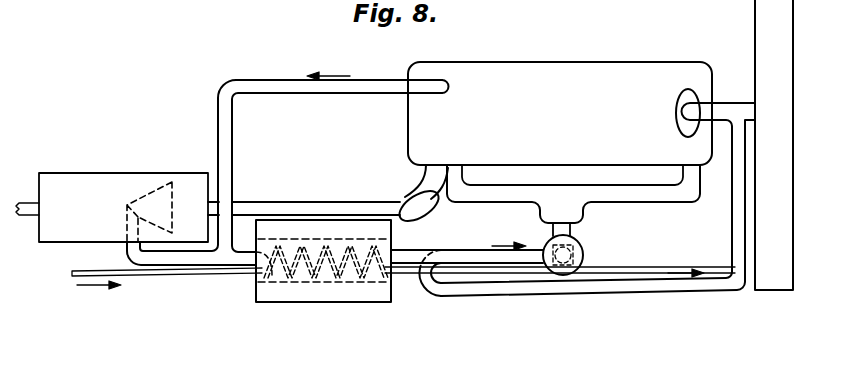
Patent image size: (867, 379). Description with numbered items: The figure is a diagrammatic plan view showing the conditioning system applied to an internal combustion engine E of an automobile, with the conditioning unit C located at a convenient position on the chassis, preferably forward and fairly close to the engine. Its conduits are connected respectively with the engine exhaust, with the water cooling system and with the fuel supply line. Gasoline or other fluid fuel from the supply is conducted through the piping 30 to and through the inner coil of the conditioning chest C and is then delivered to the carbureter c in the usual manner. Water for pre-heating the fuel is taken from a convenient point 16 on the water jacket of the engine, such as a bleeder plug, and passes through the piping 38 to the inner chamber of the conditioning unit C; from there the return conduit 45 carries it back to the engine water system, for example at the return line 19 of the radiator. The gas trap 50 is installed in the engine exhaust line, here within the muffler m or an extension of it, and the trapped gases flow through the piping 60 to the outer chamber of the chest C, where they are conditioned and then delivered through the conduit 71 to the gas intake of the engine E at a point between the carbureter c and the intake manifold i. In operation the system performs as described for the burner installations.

The water jacket point 16 is at (428, 82).
The return line of the radiator 19 is at (725, 108).
The piping 30 is at (170, 277).
The piping 38 is at (234, 137).
The return conduit 45 is at (644, 290).
The gas trap 50 is at (152, 195).
The piping 60 is at (217, 257).
The conduit 71 is at (476, 253).
The internal combustion engine E is at (568, 62).
The muffler m is at (91, 178).
The conditioning unit C is at (380, 308).
The intake manifold i is at (586, 208).
The carbureter c is at (584, 256).